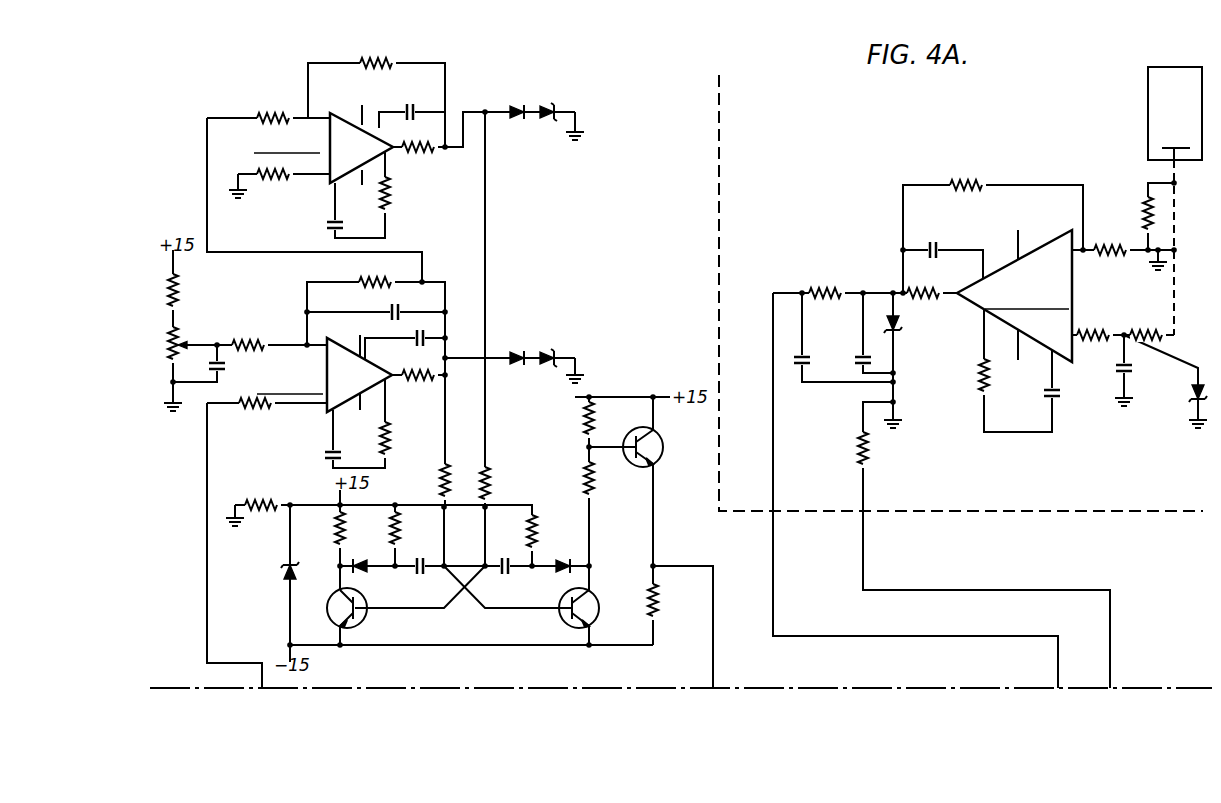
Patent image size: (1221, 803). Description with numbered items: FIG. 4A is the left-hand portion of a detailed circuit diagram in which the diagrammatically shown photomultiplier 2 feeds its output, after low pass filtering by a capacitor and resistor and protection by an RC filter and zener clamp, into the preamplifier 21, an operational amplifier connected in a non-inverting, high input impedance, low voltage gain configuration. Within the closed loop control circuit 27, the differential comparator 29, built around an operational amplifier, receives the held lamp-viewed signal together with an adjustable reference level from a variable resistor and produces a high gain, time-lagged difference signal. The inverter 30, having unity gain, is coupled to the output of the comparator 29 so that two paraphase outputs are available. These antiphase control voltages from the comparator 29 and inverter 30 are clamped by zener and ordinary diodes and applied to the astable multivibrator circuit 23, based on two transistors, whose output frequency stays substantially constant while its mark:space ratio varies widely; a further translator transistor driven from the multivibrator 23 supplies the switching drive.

The photomultiplier 2 is at (1148, 113).
The preamplifier 21 is at (1037, 332).
The astable multivibrator circuit 23 is at (670, 560).
The closed loop control circuit 27 is at (195, 519).
The differential comparator circuit 29 is at (300, 430).
The inverter 30 is at (405, 160).